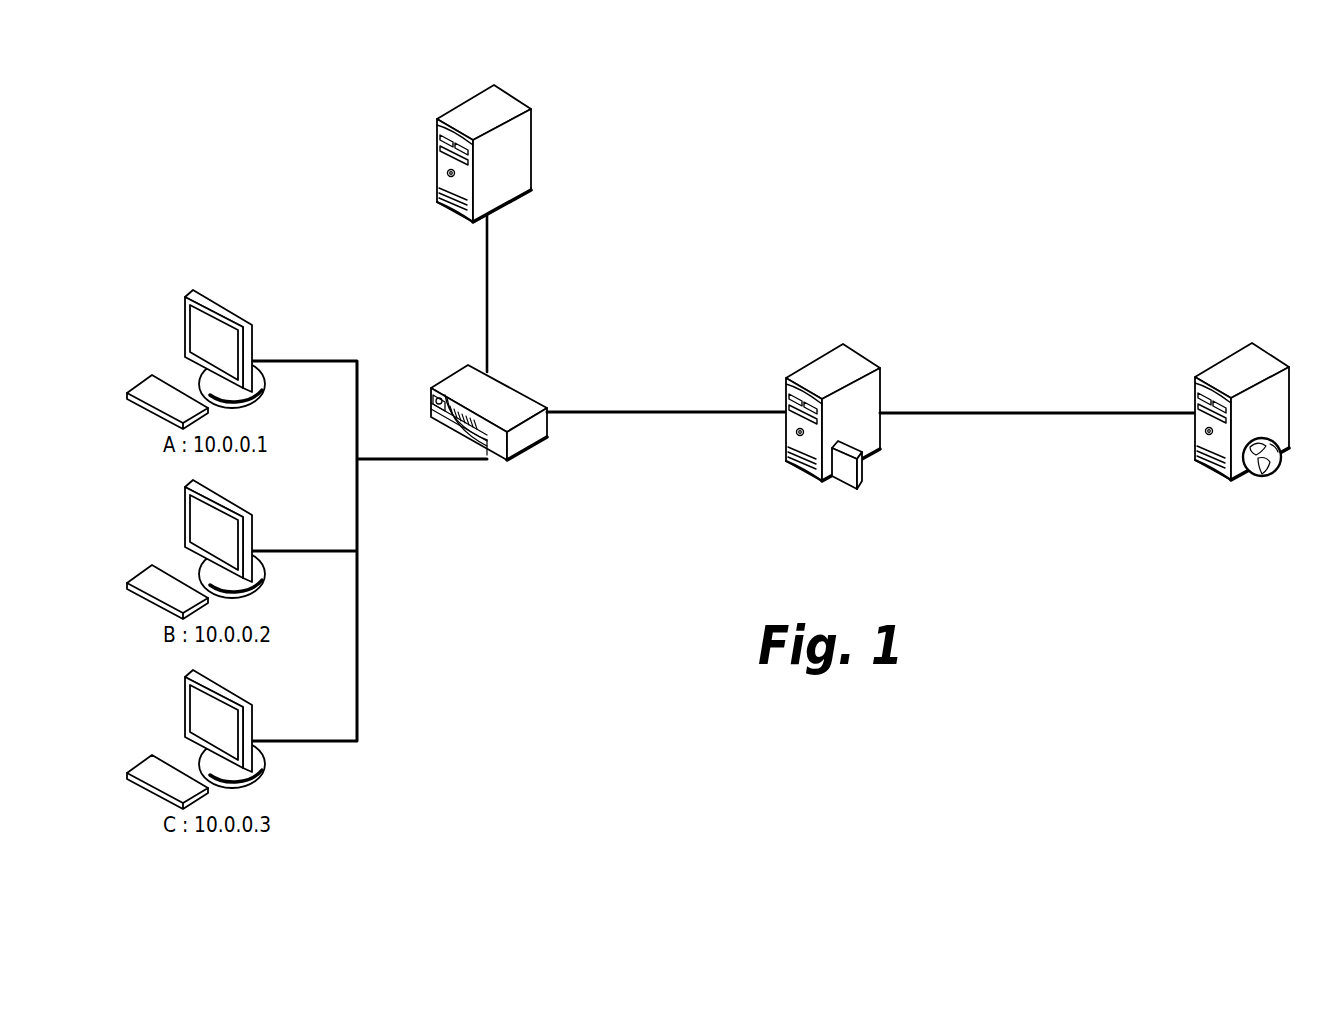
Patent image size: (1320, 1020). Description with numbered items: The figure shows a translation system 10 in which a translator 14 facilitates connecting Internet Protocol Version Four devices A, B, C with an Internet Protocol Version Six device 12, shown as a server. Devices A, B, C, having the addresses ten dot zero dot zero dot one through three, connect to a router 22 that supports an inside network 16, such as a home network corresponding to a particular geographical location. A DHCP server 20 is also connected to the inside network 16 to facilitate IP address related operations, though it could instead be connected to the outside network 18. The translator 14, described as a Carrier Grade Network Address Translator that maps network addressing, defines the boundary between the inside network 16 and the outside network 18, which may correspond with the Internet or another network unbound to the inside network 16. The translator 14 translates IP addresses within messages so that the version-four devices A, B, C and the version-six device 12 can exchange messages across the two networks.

The translation system 10 is at (345, 232).
The IPv6 device 12 is at (1225, 358).
The translator 14 is at (858, 352).
The inside network 16 is at (668, 365).
The outside network 18 is at (1122, 365).
The DHCP server 20 is at (485, 112).
The router 22 is at (517, 388).